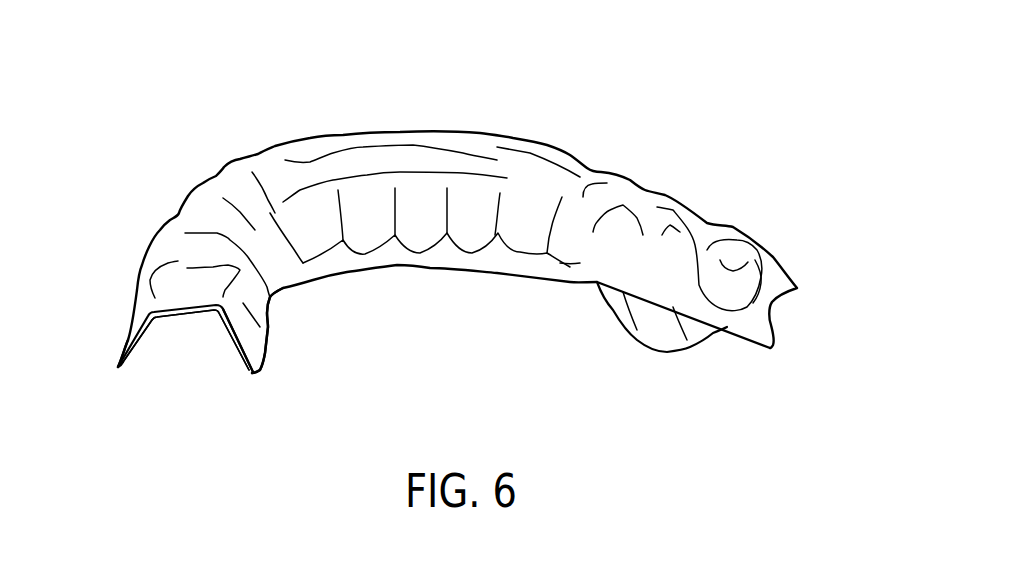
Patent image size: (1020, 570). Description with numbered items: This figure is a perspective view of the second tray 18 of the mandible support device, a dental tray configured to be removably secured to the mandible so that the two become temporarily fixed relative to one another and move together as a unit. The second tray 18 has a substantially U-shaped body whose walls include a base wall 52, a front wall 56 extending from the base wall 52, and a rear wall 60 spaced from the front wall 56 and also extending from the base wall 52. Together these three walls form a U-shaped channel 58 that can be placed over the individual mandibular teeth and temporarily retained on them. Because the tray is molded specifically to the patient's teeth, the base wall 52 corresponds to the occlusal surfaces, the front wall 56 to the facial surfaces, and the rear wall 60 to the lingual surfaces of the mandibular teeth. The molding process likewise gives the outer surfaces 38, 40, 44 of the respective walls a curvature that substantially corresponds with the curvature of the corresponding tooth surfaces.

The second tray 18 is at (743, 138).
The outer surface 38 is at (425, 132).
The outer surface 40 is at (733, 224).
The outer surface 44 is at (270, 324).
The base wall 52 is at (203, 303).
The front wall 56 is at (123, 353).
The U shaped channel 58 is at (178, 358).
The rear wall 60 is at (250, 367).